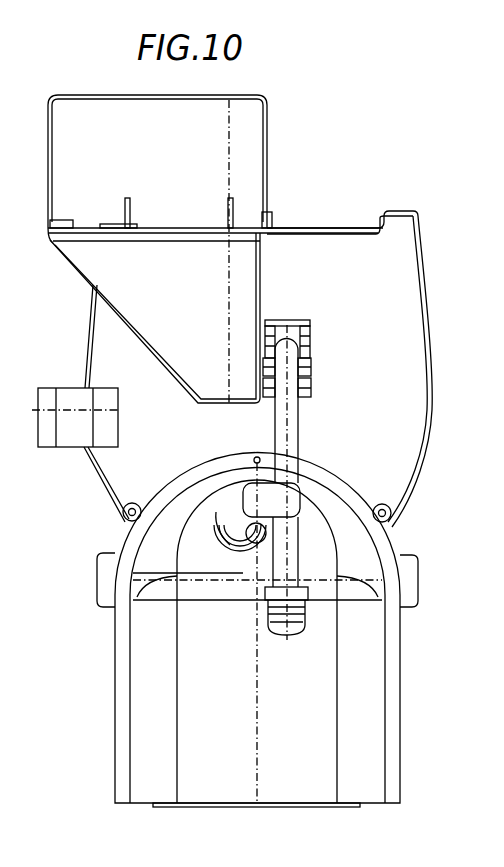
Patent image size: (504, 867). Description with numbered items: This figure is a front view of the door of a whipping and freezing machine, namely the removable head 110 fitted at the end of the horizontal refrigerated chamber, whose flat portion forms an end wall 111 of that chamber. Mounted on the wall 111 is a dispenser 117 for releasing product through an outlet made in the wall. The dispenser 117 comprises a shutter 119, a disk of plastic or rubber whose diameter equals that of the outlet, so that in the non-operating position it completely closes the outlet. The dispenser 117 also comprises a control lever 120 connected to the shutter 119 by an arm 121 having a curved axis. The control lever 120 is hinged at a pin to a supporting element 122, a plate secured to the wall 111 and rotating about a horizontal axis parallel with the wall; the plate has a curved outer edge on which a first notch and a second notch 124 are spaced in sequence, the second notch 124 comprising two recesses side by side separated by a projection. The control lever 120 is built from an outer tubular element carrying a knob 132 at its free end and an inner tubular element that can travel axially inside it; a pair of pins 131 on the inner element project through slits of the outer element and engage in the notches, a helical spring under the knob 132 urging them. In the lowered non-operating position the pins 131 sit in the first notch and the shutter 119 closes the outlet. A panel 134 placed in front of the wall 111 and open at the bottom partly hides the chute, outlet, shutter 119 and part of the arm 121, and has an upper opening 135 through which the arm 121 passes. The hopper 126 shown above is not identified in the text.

The removable head 110 is at (371, 320).
The end wall 111 is at (430, 210).
The dispenser 117 is at (302, 445).
The shutter 119 is at (245, 548).
The control lever 120 is at (300, 563).
The arm 121 is at (256, 540).
The supporting element 122 is at (302, 335).
The second notch 124 is at (262, 357).
The hopper 126 is at (152, 262).
The pins 131 is at (263, 387).
The knob 132 is at (293, 622).
The panel 134 is at (353, 742).
The upper opening 135 is at (238, 505).